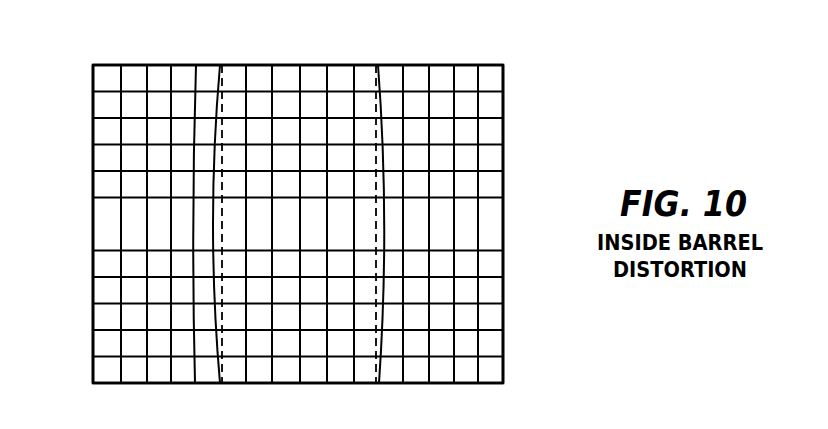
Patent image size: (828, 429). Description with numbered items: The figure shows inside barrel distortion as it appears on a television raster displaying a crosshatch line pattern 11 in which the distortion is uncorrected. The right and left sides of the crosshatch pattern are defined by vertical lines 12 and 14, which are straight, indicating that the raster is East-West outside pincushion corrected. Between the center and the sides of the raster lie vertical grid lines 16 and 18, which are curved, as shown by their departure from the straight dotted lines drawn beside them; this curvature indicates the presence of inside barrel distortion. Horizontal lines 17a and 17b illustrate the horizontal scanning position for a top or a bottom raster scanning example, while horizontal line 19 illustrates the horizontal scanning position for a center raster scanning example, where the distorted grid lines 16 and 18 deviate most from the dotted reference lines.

The crosshatch line pattern 11 is at (59, 113).
The vertical line 12 is at (503, 209).
The vertical line 14 is at (93, 206).
The vertical grid line 16 is at (385, 213).
The horizontal line 17a is at (292, 65).
The horizontal line 17b is at (383, 385).
The vertical grid line 18 is at (215, 212).
The horizontal line 19 is at (311, 220).